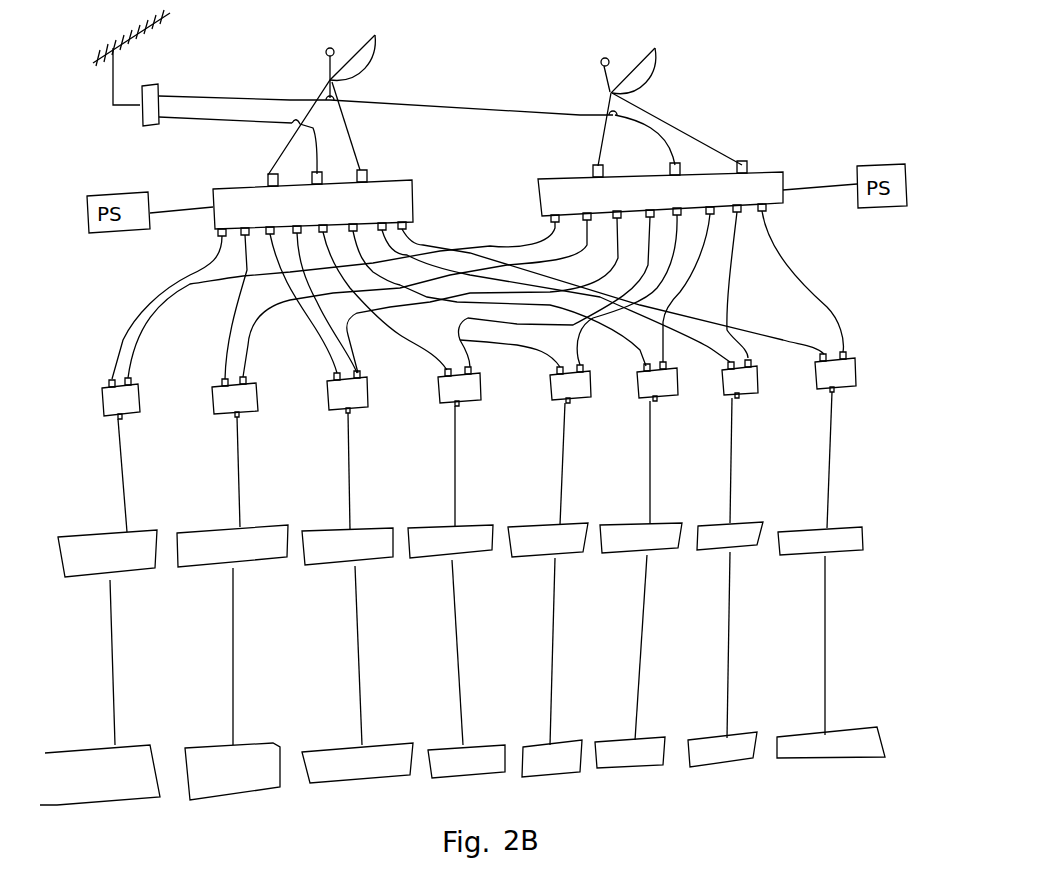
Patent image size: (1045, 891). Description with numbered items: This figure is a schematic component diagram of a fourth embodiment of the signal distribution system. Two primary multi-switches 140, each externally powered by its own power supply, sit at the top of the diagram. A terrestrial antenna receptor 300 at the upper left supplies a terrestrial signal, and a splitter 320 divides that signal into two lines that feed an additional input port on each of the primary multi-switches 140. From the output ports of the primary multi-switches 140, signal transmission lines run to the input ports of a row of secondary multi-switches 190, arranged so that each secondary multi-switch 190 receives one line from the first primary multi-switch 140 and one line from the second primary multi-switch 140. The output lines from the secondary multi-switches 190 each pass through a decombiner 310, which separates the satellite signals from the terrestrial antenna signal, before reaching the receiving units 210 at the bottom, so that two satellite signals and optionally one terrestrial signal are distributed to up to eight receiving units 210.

The primary multi-switch 140 is at (413, 188).
The secondary multi-switch 190 is at (848, 372).
The receiving unit 210 is at (866, 731).
The terrestrial antenna receptor 300 is at (108, 76).
The decombiner 310 is at (853, 542).
The splitter 320 is at (146, 126).